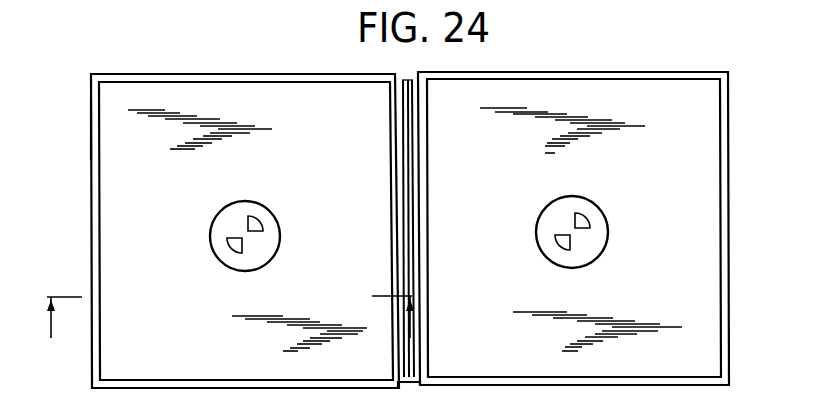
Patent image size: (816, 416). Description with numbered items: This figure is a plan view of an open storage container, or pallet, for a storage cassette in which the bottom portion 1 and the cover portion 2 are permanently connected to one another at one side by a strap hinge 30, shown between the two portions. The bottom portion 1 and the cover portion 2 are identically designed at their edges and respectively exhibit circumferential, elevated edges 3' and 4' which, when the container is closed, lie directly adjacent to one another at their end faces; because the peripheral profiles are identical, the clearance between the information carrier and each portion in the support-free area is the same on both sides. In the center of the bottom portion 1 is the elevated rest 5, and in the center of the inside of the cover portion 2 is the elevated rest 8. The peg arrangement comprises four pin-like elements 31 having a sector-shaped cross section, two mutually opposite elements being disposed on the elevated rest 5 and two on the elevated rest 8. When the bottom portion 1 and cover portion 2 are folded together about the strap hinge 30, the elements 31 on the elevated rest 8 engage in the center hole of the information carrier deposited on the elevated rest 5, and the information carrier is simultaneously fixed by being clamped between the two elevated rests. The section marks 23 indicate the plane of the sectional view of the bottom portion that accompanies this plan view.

The bottom portion 1 is at (498, 86).
The cover portion 2 is at (258, 90).
The elevated edge 3' is at (77, 130).
The elevated edge 4' is at (664, 59).
The elevated rest 5 is at (607, 228).
The elevated rest 8 is at (273, 234).
The section line 23 is at (433, 334).
The strap hinge 30 is at (403, 78).
The pin-like elements 31 is at (260, 220).